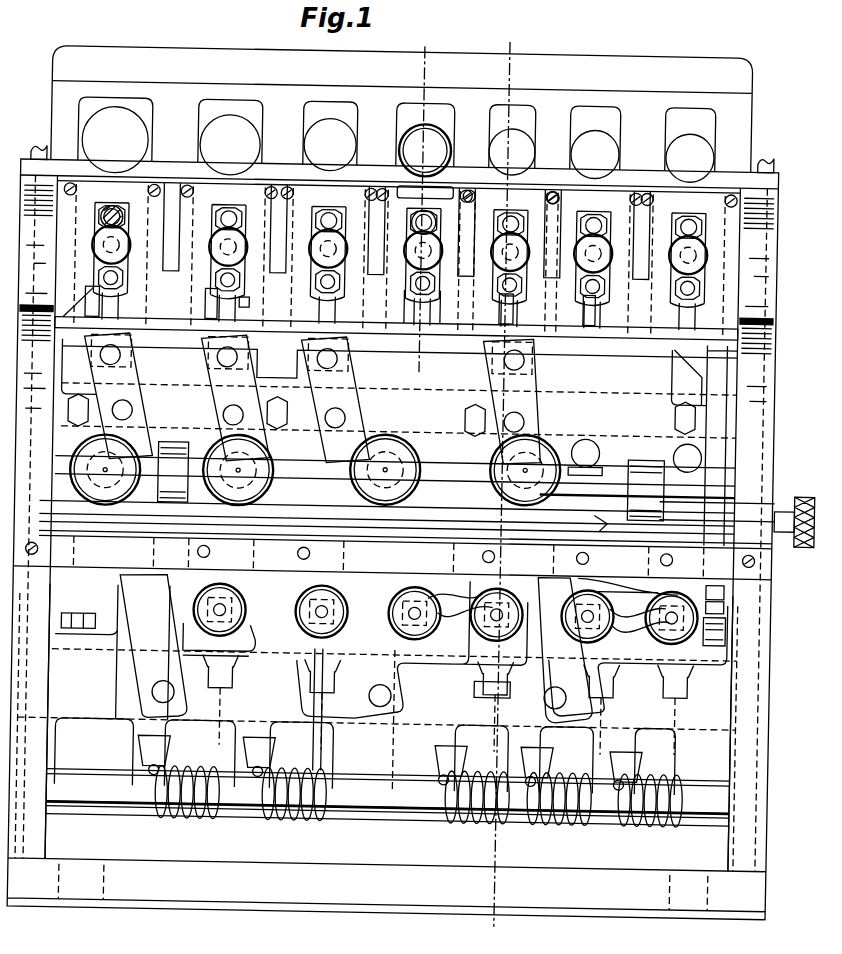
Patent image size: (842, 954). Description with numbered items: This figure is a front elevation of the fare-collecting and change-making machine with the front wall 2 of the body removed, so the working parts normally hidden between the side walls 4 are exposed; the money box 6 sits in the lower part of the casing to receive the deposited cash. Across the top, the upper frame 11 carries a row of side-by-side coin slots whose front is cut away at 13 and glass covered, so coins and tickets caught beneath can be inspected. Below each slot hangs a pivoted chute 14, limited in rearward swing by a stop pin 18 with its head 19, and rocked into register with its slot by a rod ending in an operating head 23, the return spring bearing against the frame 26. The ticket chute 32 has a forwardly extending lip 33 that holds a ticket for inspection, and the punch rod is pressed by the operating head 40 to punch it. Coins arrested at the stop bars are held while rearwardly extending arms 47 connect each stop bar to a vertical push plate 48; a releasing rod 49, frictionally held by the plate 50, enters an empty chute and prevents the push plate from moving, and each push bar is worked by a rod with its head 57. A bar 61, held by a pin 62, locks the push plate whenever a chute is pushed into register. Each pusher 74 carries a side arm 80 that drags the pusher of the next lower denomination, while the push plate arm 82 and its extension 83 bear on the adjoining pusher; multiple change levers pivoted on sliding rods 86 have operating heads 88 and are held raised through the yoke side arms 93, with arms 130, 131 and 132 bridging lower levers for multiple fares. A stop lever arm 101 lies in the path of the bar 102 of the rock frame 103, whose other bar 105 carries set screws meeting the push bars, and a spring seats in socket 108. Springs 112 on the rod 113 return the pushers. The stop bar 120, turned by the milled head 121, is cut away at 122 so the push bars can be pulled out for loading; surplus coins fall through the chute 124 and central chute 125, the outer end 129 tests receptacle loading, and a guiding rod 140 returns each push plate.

The front wall 2 is at (500, 482).
The side walls 4 is at (421, 207).
The money box 6 is at (376, 727).
The upper frame 11 is at (175, 62).
The cut away opening 13 is at (345, 122).
The chutes 14 is at (245, 186).
The stop pin 18 is at (110, 216).
The head 19 is at (326, 216).
The operating head 23 is at (238, 246).
The frame 26 is at (206, 238).
The ticket chute 32 is at (446, 278).
The lip 33 is at (430, 222).
The operating head 40 is at (425, 146).
The arms 47 is at (486, 340).
The push plate 48 is at (352, 430).
The rod 49 is at (226, 334).
The plate 50 is at (362, 323).
The head 57 is at (410, 452).
The bar 61 is at (116, 303).
The pin 62 is at (261, 299).
The pusher 74 is at (702, 694).
The side arm 80 is at (258, 646).
The arm 82 is at (440, 663).
The extension 83 is at (508, 686).
The rods 86 is at (728, 608).
The operating heads 88 is at (248, 610).
The side arms 93 is at (726, 590).
The arm 101 is at (637, 488).
The bar 102 is at (452, 462).
The rock frame 103 is at (640, 456).
The bar 105 is at (420, 520).
The socket 108 is at (580, 440).
The springs 112 is at (328, 755).
The rod 113 is at (390, 820).
The stop bar 120 is at (407, 519).
The milled head 121 is at (803, 490).
The cut away 122 is at (603, 525).
The chute 124 is at (725, 424).
The central chute 125 is at (398, 740).
The outer end 129 is at (312, 556).
The arm 130 is at (639, 620).
The arm 131 is at (628, 586).
The arm 132 is at (460, 604).
The guiding rod 140 is at (230, 408).